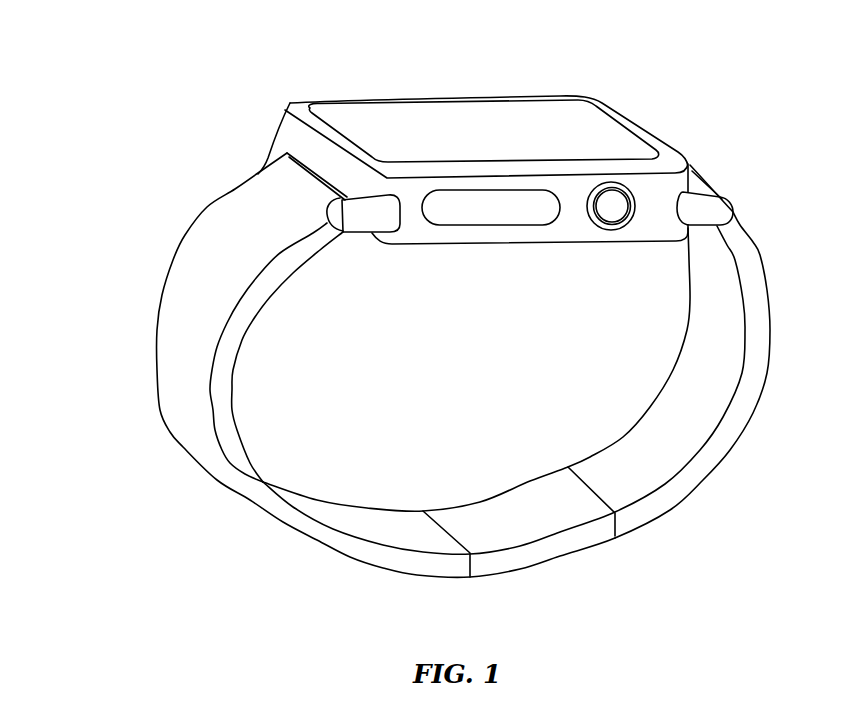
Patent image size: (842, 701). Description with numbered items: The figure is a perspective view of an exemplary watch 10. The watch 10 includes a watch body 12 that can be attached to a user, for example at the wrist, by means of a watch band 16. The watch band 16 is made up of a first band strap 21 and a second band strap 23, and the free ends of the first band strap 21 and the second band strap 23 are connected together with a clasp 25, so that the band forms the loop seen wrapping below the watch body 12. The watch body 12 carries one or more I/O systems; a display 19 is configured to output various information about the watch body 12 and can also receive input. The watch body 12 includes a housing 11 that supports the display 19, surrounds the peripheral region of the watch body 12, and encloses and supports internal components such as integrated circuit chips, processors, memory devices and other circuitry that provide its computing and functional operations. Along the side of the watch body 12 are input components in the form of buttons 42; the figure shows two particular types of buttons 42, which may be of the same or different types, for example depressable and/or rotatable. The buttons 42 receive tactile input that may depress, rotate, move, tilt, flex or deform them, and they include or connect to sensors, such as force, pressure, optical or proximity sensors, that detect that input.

The watch 10 is at (141, 76).
The housing 11 is at (692, 167).
The watch body 12 is at (240, 106).
The watch band 16 is at (122, 239).
The display 19 is at (445, 130).
The first band strap 21 is at (670, 511).
The second band strap 23 is at (393, 575).
The clasp 25 is at (540, 568).
The buttons 42 is at (503, 225).